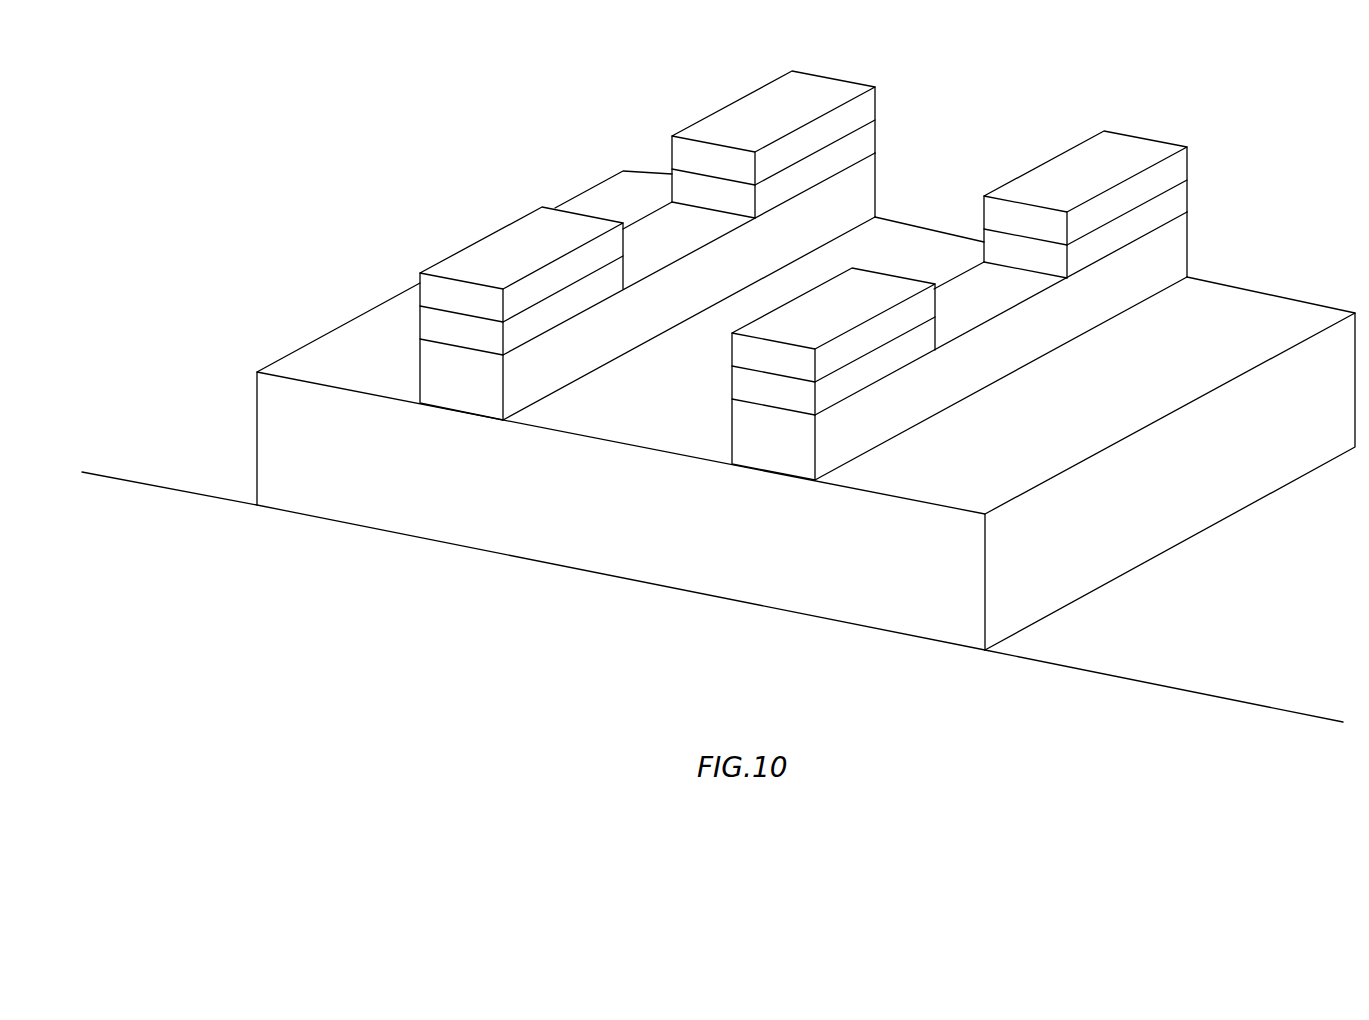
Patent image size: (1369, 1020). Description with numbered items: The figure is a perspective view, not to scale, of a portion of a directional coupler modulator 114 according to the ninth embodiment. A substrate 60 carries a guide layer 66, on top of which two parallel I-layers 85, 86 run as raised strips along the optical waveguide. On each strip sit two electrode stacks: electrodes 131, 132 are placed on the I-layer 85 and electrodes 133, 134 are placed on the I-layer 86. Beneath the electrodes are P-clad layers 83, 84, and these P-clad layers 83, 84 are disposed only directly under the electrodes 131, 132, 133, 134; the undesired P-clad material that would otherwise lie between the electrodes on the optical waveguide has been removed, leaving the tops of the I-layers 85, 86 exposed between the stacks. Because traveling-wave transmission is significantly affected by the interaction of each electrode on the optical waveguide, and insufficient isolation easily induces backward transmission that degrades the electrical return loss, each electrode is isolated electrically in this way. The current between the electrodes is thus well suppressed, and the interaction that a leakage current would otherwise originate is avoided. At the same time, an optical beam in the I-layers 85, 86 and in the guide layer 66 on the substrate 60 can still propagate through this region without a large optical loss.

The directional coupler modulator 114 is at (320, 167).
The substrate 60 is at (1213, 633).
The guide layer 66 is at (1237, 497).
The I-layer 85 is at (623, 340).
The I-layer 86 is at (995, 367).
The P-clad layer 83 is at (528, 320).
The P-clad layer 84 is at (850, 378).
The electrode 131 is at (748, 110).
The electrode 132 is at (497, 238).
The electrode 133 is at (1062, 168).
The electrode 134 is at (877, 287).